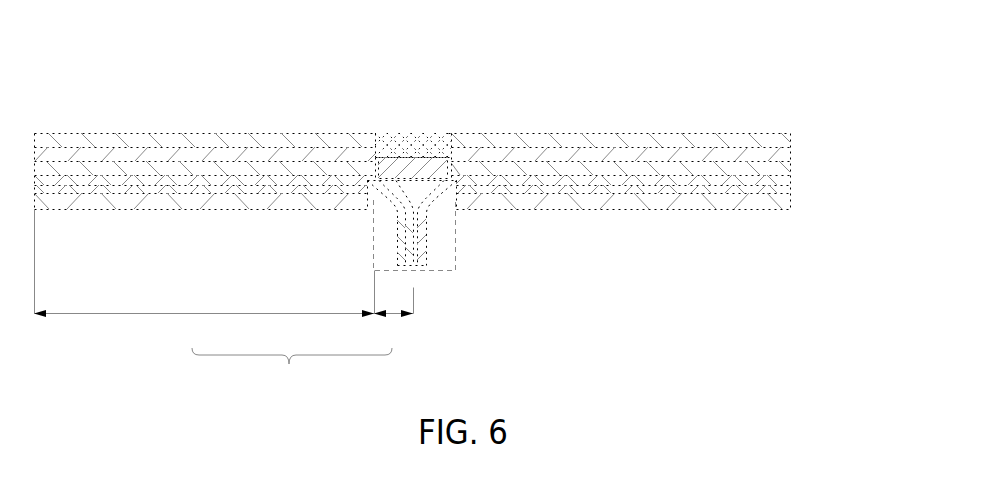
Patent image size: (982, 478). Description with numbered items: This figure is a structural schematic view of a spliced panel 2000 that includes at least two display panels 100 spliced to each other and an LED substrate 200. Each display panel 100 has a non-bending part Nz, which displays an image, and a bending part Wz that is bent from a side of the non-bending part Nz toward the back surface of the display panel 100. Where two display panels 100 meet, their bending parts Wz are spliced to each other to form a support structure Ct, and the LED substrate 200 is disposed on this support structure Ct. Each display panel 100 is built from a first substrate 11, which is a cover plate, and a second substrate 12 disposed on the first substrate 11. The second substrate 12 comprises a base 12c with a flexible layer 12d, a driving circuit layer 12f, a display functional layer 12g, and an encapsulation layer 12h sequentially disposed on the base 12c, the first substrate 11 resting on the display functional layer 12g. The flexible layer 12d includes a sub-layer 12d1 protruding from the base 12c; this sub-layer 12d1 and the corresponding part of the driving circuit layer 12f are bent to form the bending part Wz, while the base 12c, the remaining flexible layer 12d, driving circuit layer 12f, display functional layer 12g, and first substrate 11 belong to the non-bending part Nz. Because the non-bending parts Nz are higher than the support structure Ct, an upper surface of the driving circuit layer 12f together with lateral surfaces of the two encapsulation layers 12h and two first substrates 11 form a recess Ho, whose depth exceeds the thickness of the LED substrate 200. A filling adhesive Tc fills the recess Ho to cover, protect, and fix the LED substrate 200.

The spliced panel 2000 is at (793, 82).
The first substrate 11 is at (135, 142).
The second substrate 12 is at (461, 172).
The encapsulation layer 12h is at (783, 148).
The display functional layer 12g is at (783, 167).
The driving circuit layer 12f is at (783, 176).
The flexible layer 12d is at (783, 188).
The base 12c is at (441, 207).
The sub-layer 12d1 is at (417, 229).
The LED substrate 200 is at (412, 168).
The display panel 100 is at (292, 369).
The recess Ho is at (362, 138).
The filling adhesive Tc is at (428, 142).
The support structure Ct is at (452, 270).
The non-bending part Nz is at (204, 277).
The bending part Wz is at (394, 316).